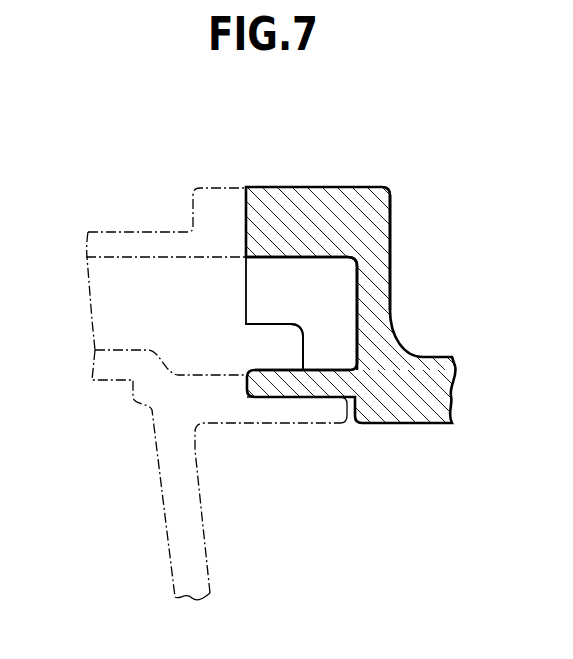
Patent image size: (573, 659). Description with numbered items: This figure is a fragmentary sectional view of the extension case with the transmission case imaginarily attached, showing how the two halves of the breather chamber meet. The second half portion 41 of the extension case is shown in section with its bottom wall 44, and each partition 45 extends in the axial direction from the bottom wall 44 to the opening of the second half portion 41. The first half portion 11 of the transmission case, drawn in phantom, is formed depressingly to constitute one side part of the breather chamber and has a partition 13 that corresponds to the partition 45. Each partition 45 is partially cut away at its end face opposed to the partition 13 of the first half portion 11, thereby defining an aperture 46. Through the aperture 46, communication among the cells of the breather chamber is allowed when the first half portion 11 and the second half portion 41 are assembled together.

The first half portion 11 is at (111, 194).
The partition 13 is at (155, 283).
The second half portion 41 is at (356, 172).
The bottom wall 44 is at (375, 288).
The partition 45 is at (288, 277).
The aperture 46 is at (277, 350).